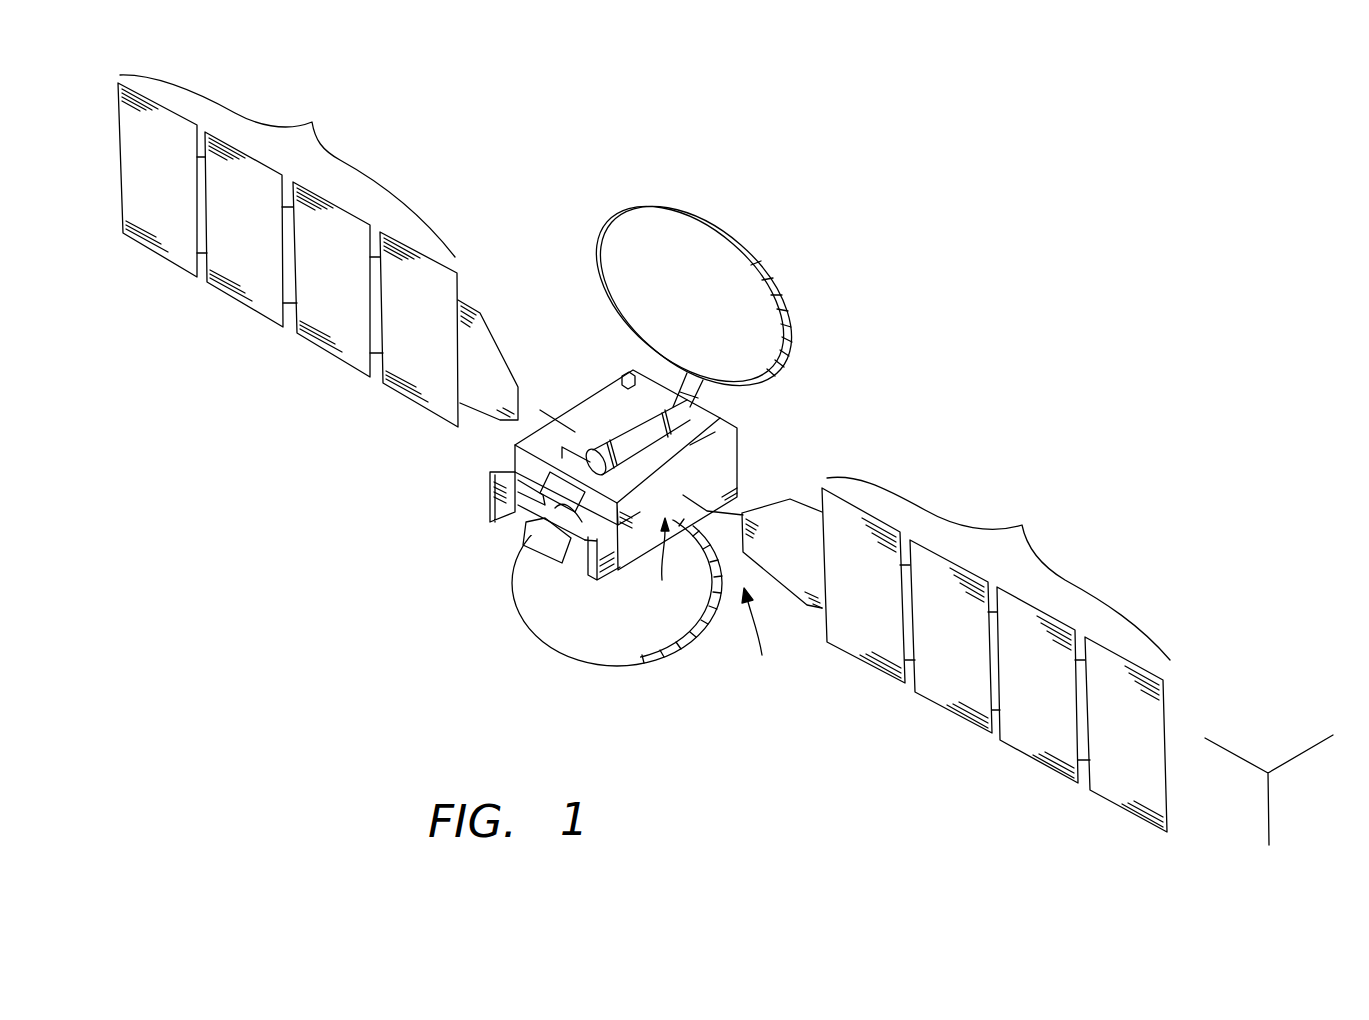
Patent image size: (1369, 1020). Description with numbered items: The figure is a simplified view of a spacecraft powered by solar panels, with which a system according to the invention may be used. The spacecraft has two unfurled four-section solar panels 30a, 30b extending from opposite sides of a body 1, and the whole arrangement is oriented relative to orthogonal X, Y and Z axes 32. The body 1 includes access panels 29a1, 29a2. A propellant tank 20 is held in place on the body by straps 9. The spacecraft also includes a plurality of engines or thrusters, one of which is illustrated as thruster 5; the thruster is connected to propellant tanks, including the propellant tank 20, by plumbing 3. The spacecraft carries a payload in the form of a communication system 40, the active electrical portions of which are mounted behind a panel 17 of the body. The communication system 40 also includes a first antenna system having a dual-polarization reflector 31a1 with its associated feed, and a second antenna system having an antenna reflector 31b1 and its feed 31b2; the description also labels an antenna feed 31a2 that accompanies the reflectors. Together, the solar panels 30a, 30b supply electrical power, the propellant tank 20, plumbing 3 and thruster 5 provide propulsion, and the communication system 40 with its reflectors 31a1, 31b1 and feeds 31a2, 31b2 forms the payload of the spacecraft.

The body 1 is at (742, 695).
The plumbing 3 is at (573, 462).
The thruster 5 is at (622, 377).
The straps 9 is at (647, 450).
The panel 17 is at (707, 478).
The propellant tank 20 is at (727, 405).
The access panel 29a1 is at (740, 427).
The access panel 29a2 is at (583, 415).
The solar panel 30a is at (318, 251).
The solar panel 30b is at (926, 654).
The dual-polarization reflector 31a1 is at (717, 240).
The antenna feed 31a2 is at (515, 457).
The antenna reflector 31b1 is at (648, 633).
The feed 31b2 is at (543, 537).
The orthogonal X, Y and Z axes 32 is at (1279, 782).
The communication system 40 is at (662, 605).